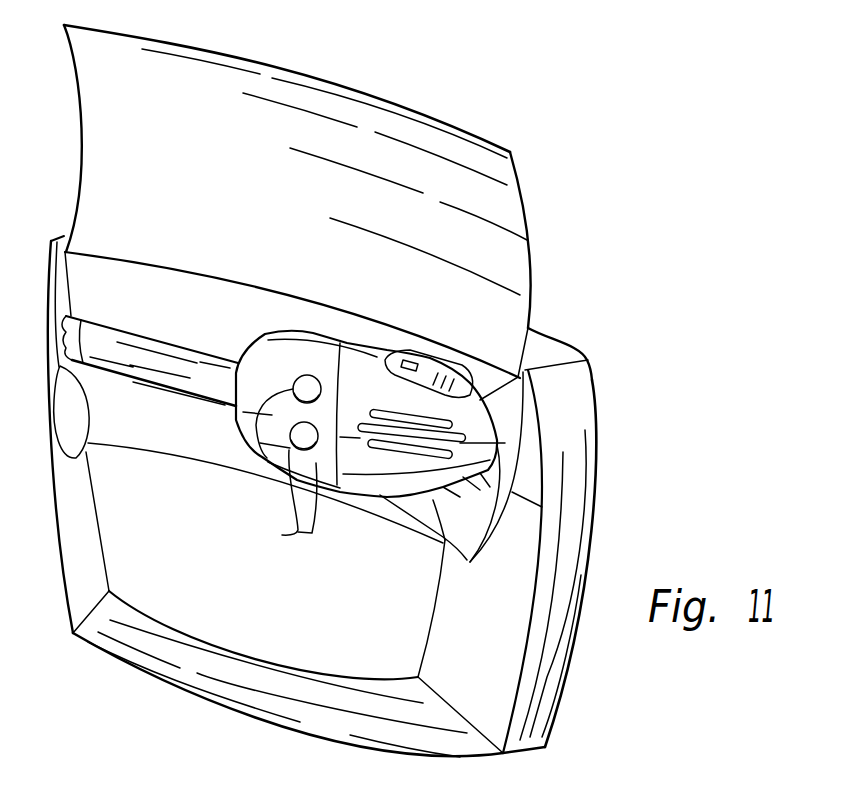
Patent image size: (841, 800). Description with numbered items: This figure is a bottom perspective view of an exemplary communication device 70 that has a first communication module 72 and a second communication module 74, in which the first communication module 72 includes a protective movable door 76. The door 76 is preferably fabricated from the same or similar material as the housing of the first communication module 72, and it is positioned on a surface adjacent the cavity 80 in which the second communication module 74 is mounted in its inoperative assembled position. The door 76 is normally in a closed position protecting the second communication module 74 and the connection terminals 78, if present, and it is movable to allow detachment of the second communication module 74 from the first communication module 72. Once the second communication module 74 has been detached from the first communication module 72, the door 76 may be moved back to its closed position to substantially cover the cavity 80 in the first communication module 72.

The communication device 70 is at (152, 715).
The first communication module 72 is at (603, 407).
The second communication module 74 is at (222, 426).
The protective movable door 76 is at (427, 215).
The connection terminals 78 is at (287, 531).
The cavity 80 is at (440, 356).